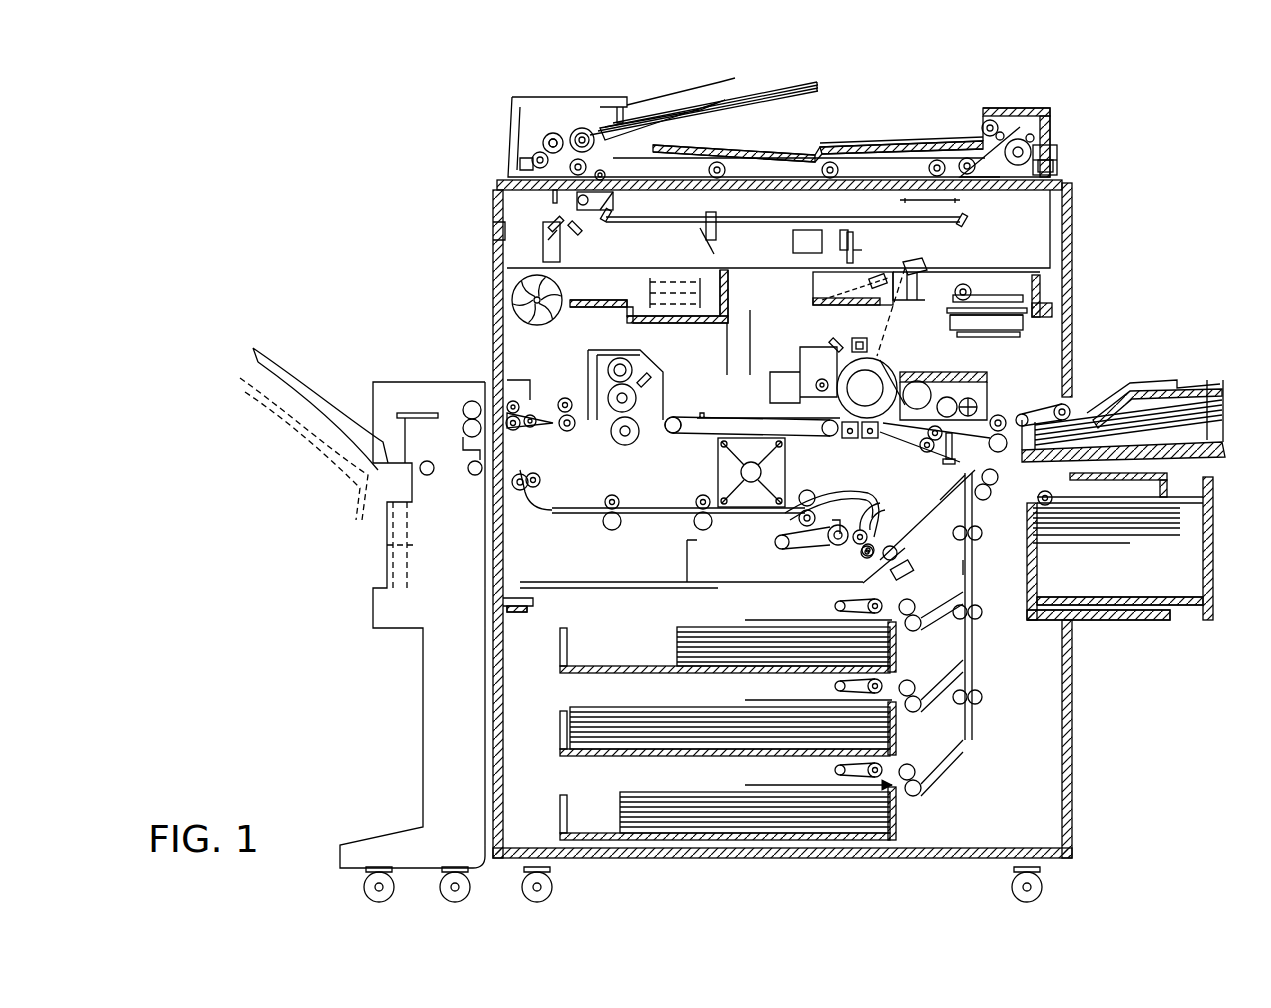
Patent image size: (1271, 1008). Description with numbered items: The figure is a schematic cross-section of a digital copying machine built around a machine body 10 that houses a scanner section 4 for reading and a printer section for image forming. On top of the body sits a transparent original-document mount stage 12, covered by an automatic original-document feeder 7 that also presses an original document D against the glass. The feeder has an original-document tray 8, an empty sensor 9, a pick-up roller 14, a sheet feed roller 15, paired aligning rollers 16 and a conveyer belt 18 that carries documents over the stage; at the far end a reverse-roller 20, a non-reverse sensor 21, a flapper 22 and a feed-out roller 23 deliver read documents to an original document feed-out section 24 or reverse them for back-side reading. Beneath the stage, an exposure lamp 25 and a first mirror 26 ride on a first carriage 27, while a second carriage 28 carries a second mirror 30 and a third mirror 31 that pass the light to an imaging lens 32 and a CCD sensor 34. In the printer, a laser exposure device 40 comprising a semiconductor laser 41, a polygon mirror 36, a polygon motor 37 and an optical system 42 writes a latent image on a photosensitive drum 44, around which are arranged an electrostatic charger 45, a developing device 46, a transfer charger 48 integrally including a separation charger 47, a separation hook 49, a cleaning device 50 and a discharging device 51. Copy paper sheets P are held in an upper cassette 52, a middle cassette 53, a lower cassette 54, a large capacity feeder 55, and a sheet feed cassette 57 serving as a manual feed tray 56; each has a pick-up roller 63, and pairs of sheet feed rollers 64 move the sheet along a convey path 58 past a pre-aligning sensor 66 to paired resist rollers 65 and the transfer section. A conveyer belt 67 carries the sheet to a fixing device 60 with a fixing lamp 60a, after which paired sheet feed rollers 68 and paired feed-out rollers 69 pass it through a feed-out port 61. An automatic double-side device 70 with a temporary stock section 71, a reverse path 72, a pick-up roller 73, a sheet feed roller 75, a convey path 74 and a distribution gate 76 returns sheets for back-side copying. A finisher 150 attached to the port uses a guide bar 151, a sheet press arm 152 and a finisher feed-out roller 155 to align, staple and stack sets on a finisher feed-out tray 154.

The scanner section 4 is at (778, 264).
The automatic original-document feeder 7 is at (790, 125).
The original-document tray 8 is at (695, 122).
The empty sensor 9 is at (612, 108).
The machine body 10 is at (1072, 728).
The original-document mount stage 12 is at (908, 153).
The pick-up roller 14 is at (553, 132).
The sheet feed roller 15 is at (537, 137).
The paired aligning rollers 16 is at (533, 163).
The conveyer belt 18 is at (783, 155).
The reverse-roller 20 is at (1060, 150).
The non-reverse sensor 21 is at (1060, 165).
The flapper 22 is at (1012, 128).
The feed-out roller 23 is at (987, 120).
The original document feed-out section 24 is at (820, 147).
The exposure lamp 25 is at (597, 197).
The first mirror 26 is at (580, 225).
The first carriage 27 is at (553, 200).
The second carriage 28 is at (543, 220).
The second mirror 30 is at (543, 247).
The third mirror 31 is at (560, 258).
The imaging lens 32 is at (830, 222).
The CCD sensor 34 is at (853, 243).
The polygon mirror 36 is at (1010, 297).
The polygon motor 37 is at (1013, 320).
The laser exposure device 40 is at (1050, 295).
The semiconductor laser 41 is at (963, 290).
The optical system 42 is at (838, 282).
The photosensitive drum 44 is at (887, 373).
The electrostatic charger 45 is at (863, 340).
The developing device 46 is at (988, 362).
The separation charger 47 is at (850, 440).
The transfer charger 48 is at (868, 440).
The separation hook 49 is at (835, 405).
The cleaning device 50 is at (810, 363).
The discharging device 51 is at (833, 342).
The upper cassette 52 is at (573, 652).
The middle cassette 53 is at (573, 733).
The lower cassette 54 is at (573, 818).
The large capacity feeder 55 is at (1143, 590).
The manual feed tray 56 is at (1142, 400).
The sheet feed cassette 57 is at (1213, 393).
The convey path 58 is at (703, 413).
The fixing device 60 is at (629, 378).
The fixing lamp 60a is at (600, 363).
The feed-out port 61 is at (487, 400).
The pick-up roller 63 is at (1070, 415).
The sheet feed rollers 64 is at (1003, 415).
The paired resist rollers 65 is at (920, 447).
The pre-aligning sensor 66 is at (947, 455).
The conveyer belt 67 is at (678, 433).
The paired sheet feed rollers 68 is at (570, 433).
The paired feed-out rollers 69 is at (520, 400).
The automatic double-side device 70 is at (552, 520).
The temporary stock section 71 is at (727, 563).
The reverse path 72 is at (585, 513).
The pick-up roller 73 is at (818, 545).
The convey path 74 is at (915, 515).
The sheet feed roller 75 is at (877, 553).
The distribution gate 76 is at (543, 410).
The finisher 150 is at (362, 591).
The guide bar 151 is at (410, 413).
The sheet press arm 152 is at (475, 473).
The finisher feed-out tray 154 is at (273, 372).
The finisher feed-out roller 155 is at (427, 478).
The original document D is at (795, 75).
The copy paper sheet P is at (1162, 395).